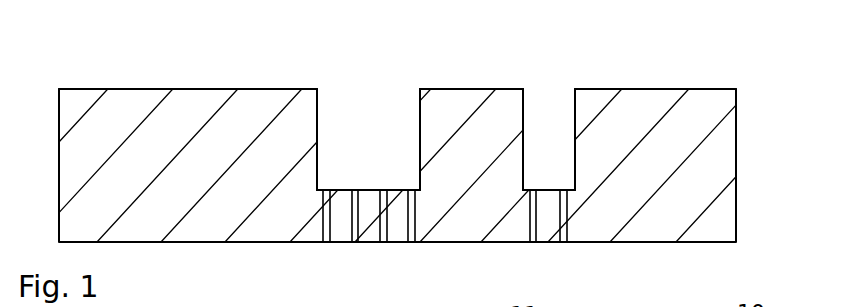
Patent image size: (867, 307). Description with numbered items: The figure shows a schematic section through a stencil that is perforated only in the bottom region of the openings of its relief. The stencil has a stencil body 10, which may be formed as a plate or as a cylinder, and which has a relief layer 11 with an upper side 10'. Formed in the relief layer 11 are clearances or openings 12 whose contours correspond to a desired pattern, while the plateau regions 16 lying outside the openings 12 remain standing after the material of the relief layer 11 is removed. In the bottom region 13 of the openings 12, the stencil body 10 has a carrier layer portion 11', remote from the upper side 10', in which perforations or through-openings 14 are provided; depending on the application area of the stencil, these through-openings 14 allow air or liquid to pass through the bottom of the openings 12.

The stencil body 10 is at (411, 123).
The upper side 10' is at (188, 55).
The relief layer 11 is at (397, 142).
The carrier layer portion 11' is at (398, 248).
The openings 12 is at (325, 128).
The bottom region 13 is at (365, 188).
The through-openings 14 is at (332, 223).
The plateau regions 16 is at (468, 83).